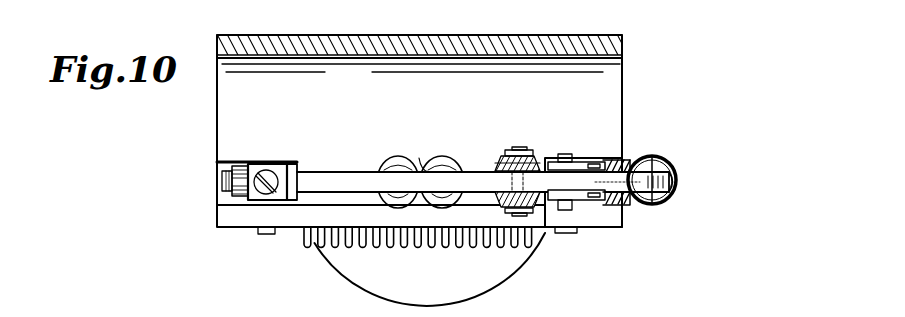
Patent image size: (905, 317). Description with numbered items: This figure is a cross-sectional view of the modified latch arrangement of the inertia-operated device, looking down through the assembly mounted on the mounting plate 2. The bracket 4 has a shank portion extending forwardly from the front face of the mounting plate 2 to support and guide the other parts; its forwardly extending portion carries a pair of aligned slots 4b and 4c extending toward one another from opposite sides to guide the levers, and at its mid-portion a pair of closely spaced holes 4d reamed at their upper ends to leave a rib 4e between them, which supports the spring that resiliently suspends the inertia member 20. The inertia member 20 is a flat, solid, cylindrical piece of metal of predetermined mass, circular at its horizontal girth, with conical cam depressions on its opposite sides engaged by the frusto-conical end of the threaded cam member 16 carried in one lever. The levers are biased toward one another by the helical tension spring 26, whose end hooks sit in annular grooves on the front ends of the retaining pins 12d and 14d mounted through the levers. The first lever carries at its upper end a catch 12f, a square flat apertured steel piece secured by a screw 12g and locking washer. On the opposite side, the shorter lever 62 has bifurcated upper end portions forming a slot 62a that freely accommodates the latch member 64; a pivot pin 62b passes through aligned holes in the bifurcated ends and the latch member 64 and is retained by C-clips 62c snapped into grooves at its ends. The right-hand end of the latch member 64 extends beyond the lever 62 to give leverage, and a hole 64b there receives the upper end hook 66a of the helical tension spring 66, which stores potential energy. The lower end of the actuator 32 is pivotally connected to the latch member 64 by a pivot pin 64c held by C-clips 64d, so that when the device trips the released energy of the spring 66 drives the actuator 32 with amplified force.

The mounting plate 2 is at (628, 41).
The bracket 4 is at (221, 215).
The slot 4b is at (218, 163).
The slot 4c is at (605, 201).
The holes 4d is at (382, 160).
The rib 4e is at (420, 158).
The retaining pin 12d is at (266, 237).
The catch 12f is at (259, 163).
The screw 12g is at (284, 168).
The retaining pin 14d is at (570, 235).
The cam member 16 is at (221, 182).
The inertia member 20 is at (477, 274).
The helical tension spring 26 is at (405, 247).
The actuator 32 is at (490, 165).
The lever 62 is at (580, 214).
The slot 62a is at (576, 170).
The pivot pin 62b is at (566, 154).
The C-clips 62c is at (572, 162).
The latch member 64 is at (334, 184).
The hole 64b is at (680, 169).
The pivot pin 64c is at (516, 147).
The C-clips 64d is at (508, 155).
The helical tension spring 66 is at (667, 200).
The upper end hook 66a is at (655, 157).